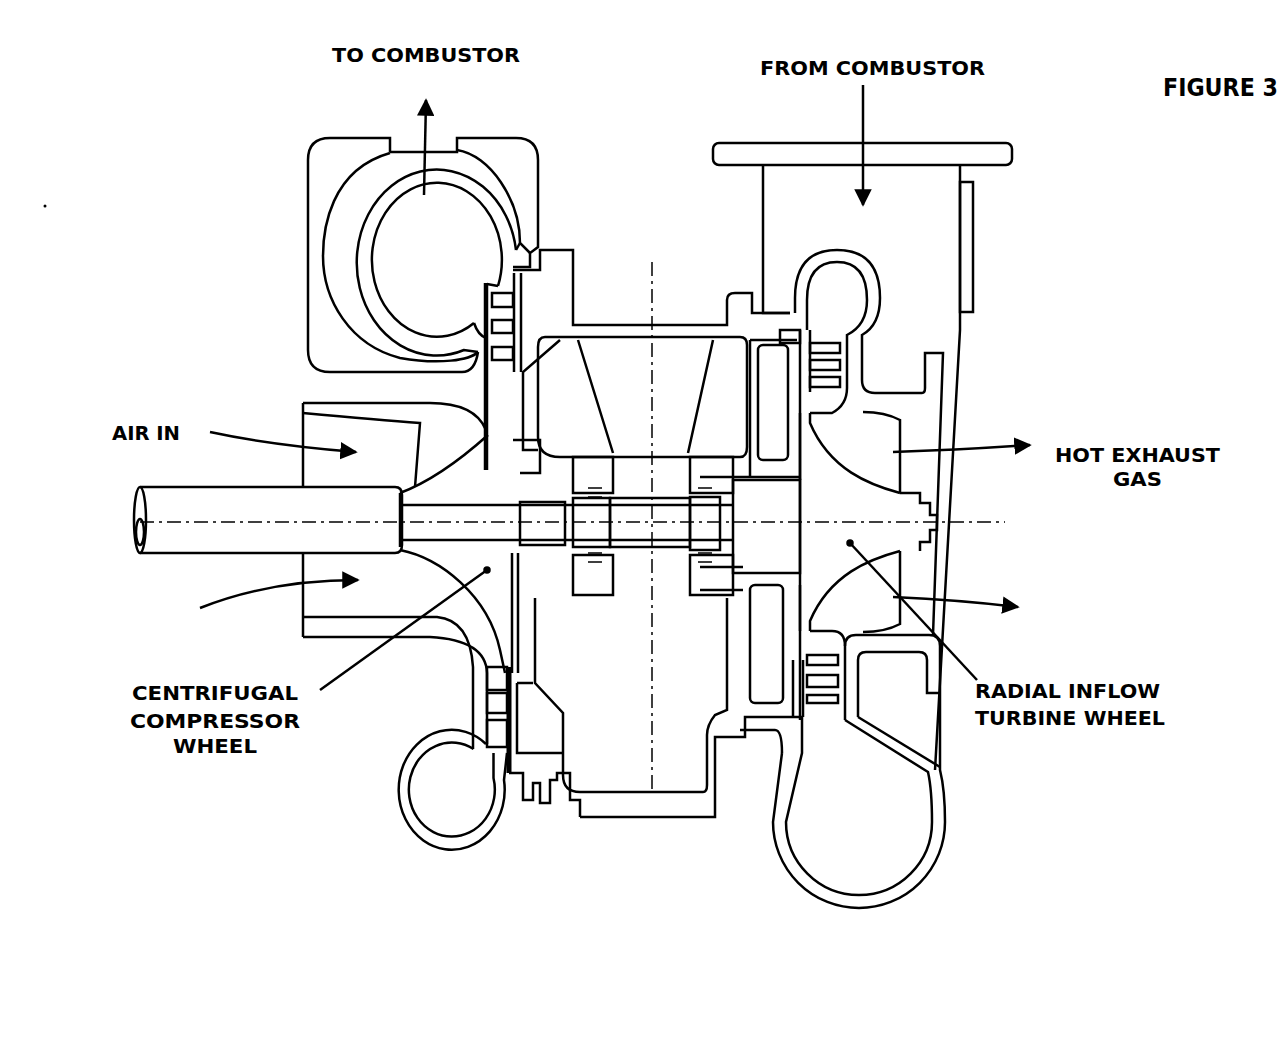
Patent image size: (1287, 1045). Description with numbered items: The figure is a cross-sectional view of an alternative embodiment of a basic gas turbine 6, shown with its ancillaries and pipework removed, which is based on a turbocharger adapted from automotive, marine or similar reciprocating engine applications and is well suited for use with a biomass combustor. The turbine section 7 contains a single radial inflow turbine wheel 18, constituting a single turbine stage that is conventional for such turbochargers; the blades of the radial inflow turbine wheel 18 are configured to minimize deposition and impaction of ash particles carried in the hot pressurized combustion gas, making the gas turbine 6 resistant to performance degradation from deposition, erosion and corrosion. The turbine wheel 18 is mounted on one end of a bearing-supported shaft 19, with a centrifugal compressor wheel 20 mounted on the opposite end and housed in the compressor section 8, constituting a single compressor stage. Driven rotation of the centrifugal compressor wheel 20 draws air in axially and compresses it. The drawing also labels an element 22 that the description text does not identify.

The gas turbine 6 is at (629, 124).
The turbine section 7 is at (968, 375).
The compressor section 8 is at (280, 316).
The radial inflow turbine wheel 18 is at (837, 497).
The bearing-supported shaft 19 is at (630, 545).
The centrifugal compressor wheel 20 is at (440, 552).
The shaft 22 is at (175, 537).